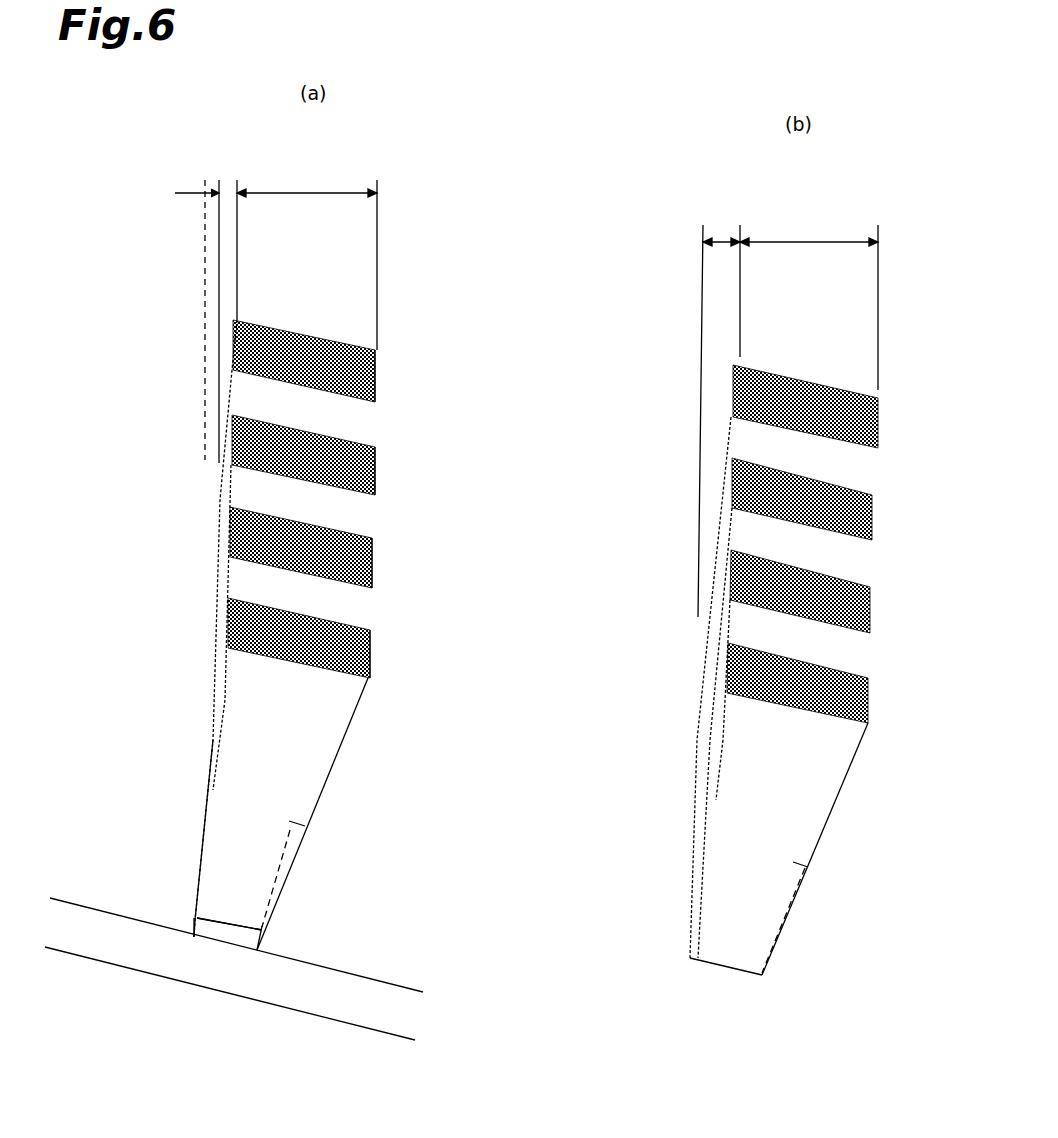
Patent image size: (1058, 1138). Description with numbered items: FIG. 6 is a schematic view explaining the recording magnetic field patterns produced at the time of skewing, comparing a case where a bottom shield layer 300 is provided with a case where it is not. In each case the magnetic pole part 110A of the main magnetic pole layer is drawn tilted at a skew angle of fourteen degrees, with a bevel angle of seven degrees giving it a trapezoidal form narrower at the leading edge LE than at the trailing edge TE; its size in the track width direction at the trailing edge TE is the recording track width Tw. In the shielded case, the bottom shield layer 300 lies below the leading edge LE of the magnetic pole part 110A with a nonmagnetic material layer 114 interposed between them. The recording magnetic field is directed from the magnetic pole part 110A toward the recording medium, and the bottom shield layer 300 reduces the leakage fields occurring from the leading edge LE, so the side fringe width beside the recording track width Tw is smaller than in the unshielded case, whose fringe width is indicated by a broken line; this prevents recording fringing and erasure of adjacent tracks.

The bottom shield layer 300 is at (212, 957).
The magnetic pole part 110A is at (263, 747).
The nonmagnetic material layer 114 is at (193, 918).
The leading edge LE is at (232, 927).
The trailing edge TE is at (370, 657).
The recording track width Tw is at (557, 276).